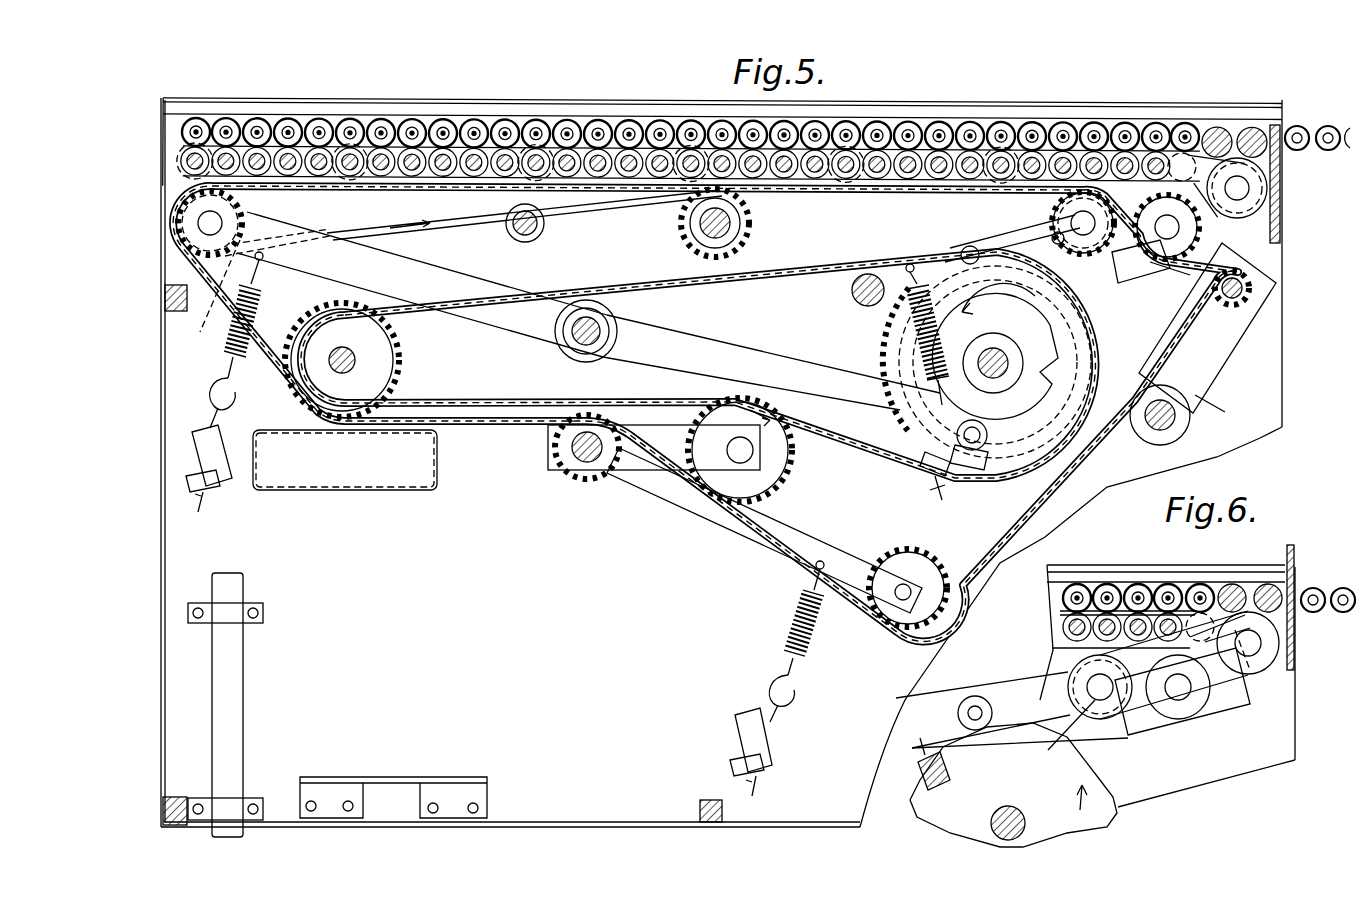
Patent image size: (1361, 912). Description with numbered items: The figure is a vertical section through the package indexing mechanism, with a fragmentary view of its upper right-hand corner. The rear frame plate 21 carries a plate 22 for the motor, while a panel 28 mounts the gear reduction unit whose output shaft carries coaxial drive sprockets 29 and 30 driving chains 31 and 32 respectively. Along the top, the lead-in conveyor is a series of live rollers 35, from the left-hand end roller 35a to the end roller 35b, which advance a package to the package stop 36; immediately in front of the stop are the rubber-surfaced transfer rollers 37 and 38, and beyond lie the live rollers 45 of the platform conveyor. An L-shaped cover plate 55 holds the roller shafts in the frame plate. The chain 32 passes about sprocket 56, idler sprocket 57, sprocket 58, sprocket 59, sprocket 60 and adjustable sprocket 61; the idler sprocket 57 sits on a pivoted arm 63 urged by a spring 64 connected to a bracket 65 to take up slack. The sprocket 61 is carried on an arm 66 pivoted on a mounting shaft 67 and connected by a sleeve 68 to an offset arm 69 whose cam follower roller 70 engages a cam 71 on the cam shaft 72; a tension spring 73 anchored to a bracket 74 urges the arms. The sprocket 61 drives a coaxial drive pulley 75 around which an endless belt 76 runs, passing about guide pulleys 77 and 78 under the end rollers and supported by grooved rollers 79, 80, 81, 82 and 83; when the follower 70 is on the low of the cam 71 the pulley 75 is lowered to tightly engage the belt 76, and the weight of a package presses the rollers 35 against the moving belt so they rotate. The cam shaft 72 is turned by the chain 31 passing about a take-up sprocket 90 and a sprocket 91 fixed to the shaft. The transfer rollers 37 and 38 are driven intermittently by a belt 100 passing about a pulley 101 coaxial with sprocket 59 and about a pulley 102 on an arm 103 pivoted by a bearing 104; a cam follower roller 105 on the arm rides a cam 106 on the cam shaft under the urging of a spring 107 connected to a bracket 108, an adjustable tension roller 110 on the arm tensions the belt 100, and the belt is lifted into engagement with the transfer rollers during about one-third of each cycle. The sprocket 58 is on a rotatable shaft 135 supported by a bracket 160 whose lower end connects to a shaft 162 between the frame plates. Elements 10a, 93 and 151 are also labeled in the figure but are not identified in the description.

In FIG. 5, the support post 10a is at (243, 738).
In FIG. 5, the rear plate 21 is at (634, 700).
In FIG. 6, the rear plate 21 is at (1205, 775).
In FIG. 5, the plate 22 is at (490, 782).
In FIG. 5, the panel 28 is at (440, 478).
In FIG. 5, the drive sprocket 29 is at (395, 358).
In FIG. 5, the drive sprocket 30 is at (375, 382).
In FIG. 5, the chain 31 is at (625, 283).
In FIG. 5, the endless drive chain 32 is at (618, 196).
In FIG. 5, the live rollers 35 is at (628, 118).
In FIG. 6, the live rollers 35 is at (1105, 584).
In FIG. 5, the left-hand end roller 35a is at (202, 118).
In FIG. 5, the end roller 35b is at (1187, 118).
In FIG. 6, the end roller 35b is at (1206, 584).
In FIG. 5, the package stop 36 is at (1278, 124).
In FIG. 6, the package stop 36 is at (1296, 556).
In FIG. 5, the rubber-surfaced roller 37 is at (1220, 120).
In FIG. 6, the rubber-surfaced roller 37 is at (1240, 584).
In FIG. 5, the rubber-surfaced roller 38 is at (1253, 120).
In FIG. 6, the rubber-surfaced roller 38 is at (1283, 566).
In FIG. 5, the live rollers 45 is at (1330, 150).
In FIG. 6, the live rollers 45 is at (1342, 614).
In FIG. 5, the cover plate 55 is at (930, 104).
In FIG. 5, the sprocket 56 is at (590, 478).
In FIG. 5, the idler sprocket 57 is at (930, 570).
In FIG. 5, the sprocket 58 is at (1180, 314).
In FIG. 5, the sprocket 59 is at (1042, 237).
In FIG. 5, the sprocket 60 is at (752, 222).
In FIG. 5, the adjustable sprocket 61 is at (245, 230).
In FIG. 5, the pivoted arm 63 is at (812, 542).
In FIG. 5, the spring 64 is at (808, 652).
In FIG. 5, the bracket 65 is at (770, 740).
In FIG. 5, the arm 66 is at (450, 276).
In FIG. 5, the mounting shaft 67 is at (612, 332).
In FIG. 5, the sleeve 68 is at (580, 362).
In FIG. 5, the offset arm 69 is at (740, 350).
In FIG. 5, the cam follower roller 70 is at (985, 428).
In FIG. 5, the cam 71 is at (995, 351).
In FIG. 5, the cam shaft 72 is at (998, 352).
In FIG. 6, the cam shaft 72 is at (1022, 816).
In FIG. 5, the tension spring 73 is at (257, 312).
In FIG. 5, the bracket 74 is at (225, 490).
In FIG. 5, the drive pulley 75 is at (259, 285).
In FIG. 5, the endless belt 76 is at (350, 118).
In FIG. 6, the endless belt 76 is at (1058, 614).
In FIG. 5, the guide pulley 77 is at (180, 120).
In FIG. 5, the guide pulley 78 is at (1176, 150).
In FIG. 6, the guide pulley 78 is at (1190, 610).
In FIG. 5, the supporting roller 79 is at (360, 150).
In FIG. 5, the supporting roller 80 is at (540, 146).
In FIG. 5, the supporting roller 81 is at (684, 146).
In FIG. 5, the supporting roller 82 is at (852, 146).
In FIG. 5, the supporting roller 83 is at (1008, 146).
In FIG. 5, the take-up sprocket 90 is at (795, 466).
In FIG. 5, the sprocket 91 is at (890, 346).
In FIG. 5, the shaft 93 is at (730, 236).
In FIG. 5, the belt 100 is at (1138, 272).
In FIG. 6, the belt 100 is at (1226, 712).
In FIG. 5, the pulley 101 is at (1060, 214).
In FIG. 6, the pulley 101 is at (1108, 716).
In FIG. 5, the pulley 102 is at (1262, 214).
In FIG. 6, the pulley 102 is at (1258, 680).
In FIG. 5, the arm 103 is at (990, 240).
In FIG. 6, the arm 103 is at (1018, 692).
In FIG. 5, the pivot bearing 104 is at (1167, 227).
In FIG. 6, the pivot bearing 104 is at (1058, 741).
In FIG. 5, the cam follower roller 105 is at (962, 250).
In FIG. 6, the cam follower roller 105 is at (977, 696).
In FIG. 5, the cam 106 is at (1092, 342).
In FIG. 6, the cam 106 is at (940, 816).
In FIG. 5, the spring 107 is at (985, 322).
In FIG. 6, the spring 107 is at (950, 768).
In FIG. 5, the bracket 108 is at (928, 478).
In FIG. 5, the adjustable tension roller 110 is at (1172, 270).
In FIG. 6, the adjustable tension roller 110 is at (1165, 714).
In FIG. 5, the rotatable shaft 135 is at (1255, 286).
In FIG. 5, the stud 151 is at (852, 292).
In FIG. 5, the bracket 160 is at (1225, 400).
In FIG. 5, the shaft 162 is at (1192, 420).